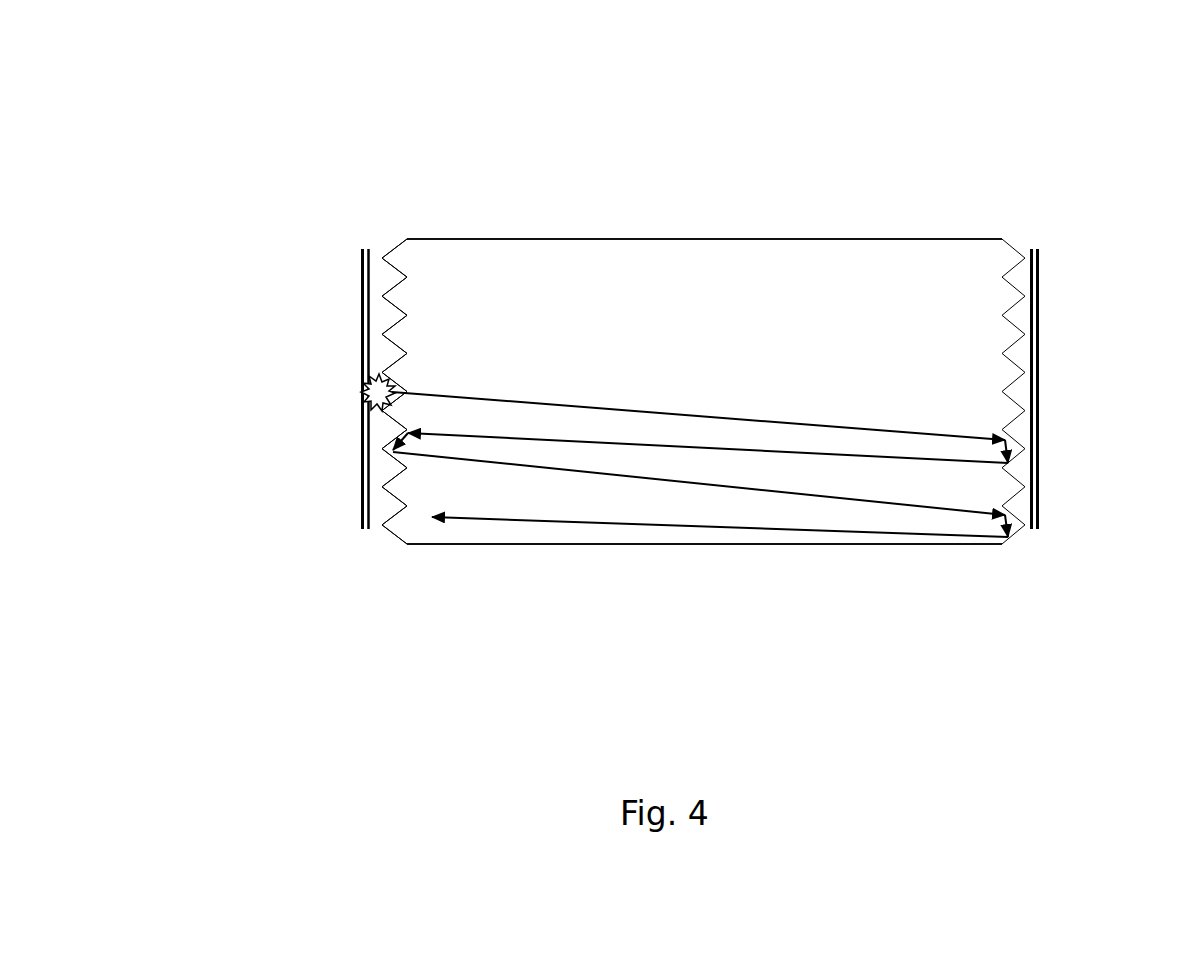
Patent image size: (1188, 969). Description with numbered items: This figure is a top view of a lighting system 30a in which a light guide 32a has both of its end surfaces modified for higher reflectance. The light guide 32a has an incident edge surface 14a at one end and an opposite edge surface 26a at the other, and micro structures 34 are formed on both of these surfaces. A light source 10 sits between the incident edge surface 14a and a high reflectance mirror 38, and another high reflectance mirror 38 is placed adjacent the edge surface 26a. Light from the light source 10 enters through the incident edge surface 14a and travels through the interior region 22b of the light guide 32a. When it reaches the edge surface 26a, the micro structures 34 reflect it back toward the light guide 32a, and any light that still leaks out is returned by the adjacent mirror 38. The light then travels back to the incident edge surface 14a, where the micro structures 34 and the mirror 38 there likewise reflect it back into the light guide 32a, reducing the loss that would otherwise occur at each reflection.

The lighting system 30a is at (510, 150).
The light guide 32a is at (652, 270).
The edge surface 26a is at (1022, 540).
The micro structures 34 is at (1013, 248).
The incident edge surface 14a is at (397, 245).
The high reflectance mirror 38 is at (362, 333).
The light source 10 is at (367, 392).
The light propagation region 22b is at (700, 434).